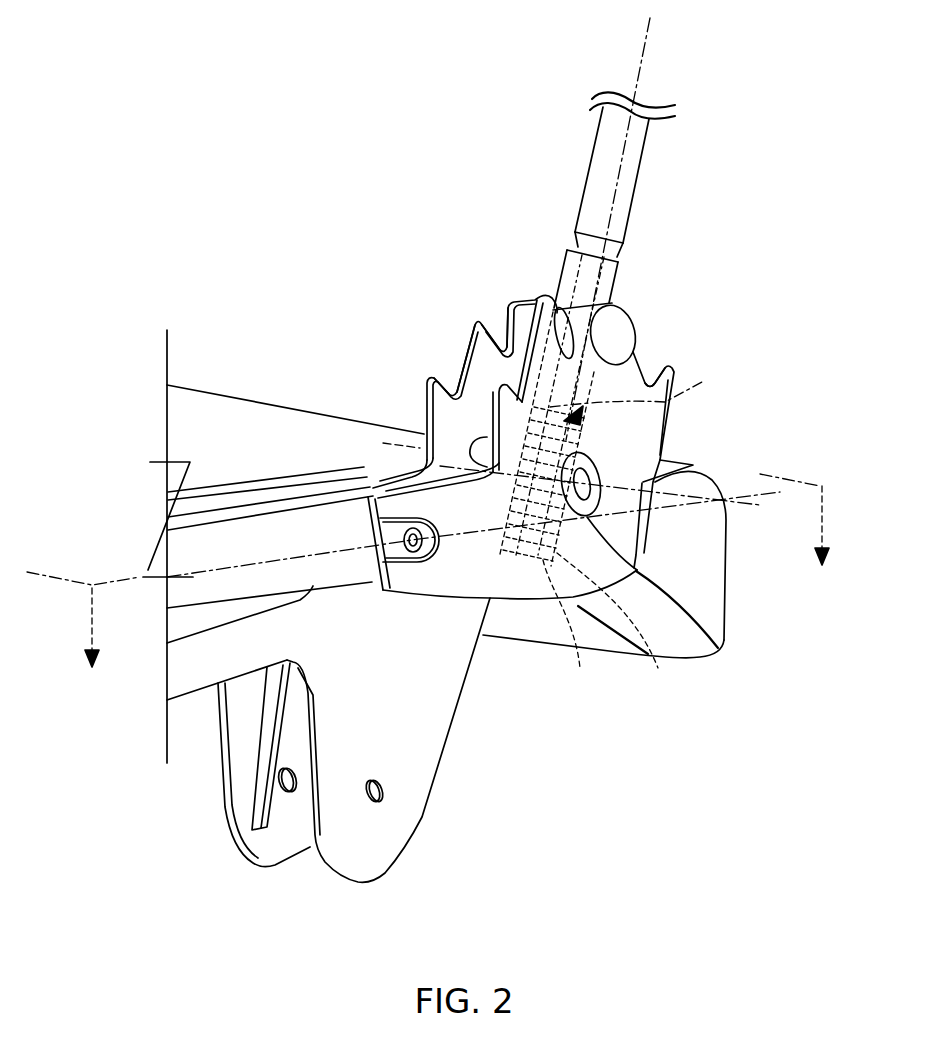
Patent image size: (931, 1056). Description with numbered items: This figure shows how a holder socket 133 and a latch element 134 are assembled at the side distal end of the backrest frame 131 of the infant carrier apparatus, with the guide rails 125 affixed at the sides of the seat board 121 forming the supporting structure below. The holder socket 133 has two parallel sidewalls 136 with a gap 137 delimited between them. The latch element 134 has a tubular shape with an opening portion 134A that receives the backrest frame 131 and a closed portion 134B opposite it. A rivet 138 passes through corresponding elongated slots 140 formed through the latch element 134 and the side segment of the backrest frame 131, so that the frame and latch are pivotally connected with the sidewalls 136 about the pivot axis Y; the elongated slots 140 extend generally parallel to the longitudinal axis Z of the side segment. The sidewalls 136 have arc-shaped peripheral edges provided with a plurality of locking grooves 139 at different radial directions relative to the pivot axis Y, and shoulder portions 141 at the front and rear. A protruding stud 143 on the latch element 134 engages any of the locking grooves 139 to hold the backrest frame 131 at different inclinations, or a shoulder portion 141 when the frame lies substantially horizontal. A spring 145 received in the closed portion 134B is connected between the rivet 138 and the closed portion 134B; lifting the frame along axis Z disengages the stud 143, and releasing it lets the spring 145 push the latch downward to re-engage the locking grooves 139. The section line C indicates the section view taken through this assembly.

The seat board 121 is at (224, 402).
The guide rail 125 is at (197, 590).
The backrest frame 131 is at (632, 178).
The holder socket 133 is at (516, 600).
The latch element 134 is at (568, 256).
The opening portion 134A is at (618, 250).
The closed portion 134B is at (580, 549).
The sidewall 136 is at (425, 404).
The gap 137 is at (490, 358).
The rivet 138 is at (712, 655).
The locking groove 139 is at (506, 304).
The elongated slot 140 is at (644, 394).
The shoulder portion 141 is at (392, 463).
The protruding stud 143 is at (620, 320).
The spring 145 is at (653, 654).
The longitudinal axis Z is at (645, 44).
The pivot axis Y is at (757, 516).
The section line C- C is at (428, 587).